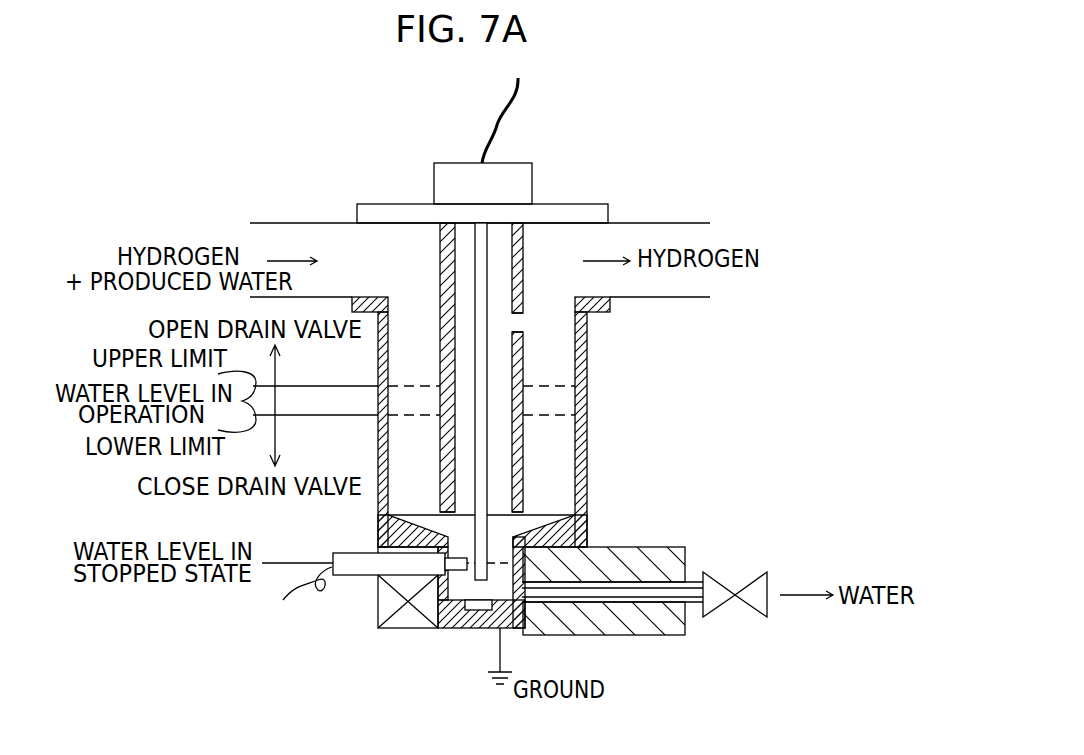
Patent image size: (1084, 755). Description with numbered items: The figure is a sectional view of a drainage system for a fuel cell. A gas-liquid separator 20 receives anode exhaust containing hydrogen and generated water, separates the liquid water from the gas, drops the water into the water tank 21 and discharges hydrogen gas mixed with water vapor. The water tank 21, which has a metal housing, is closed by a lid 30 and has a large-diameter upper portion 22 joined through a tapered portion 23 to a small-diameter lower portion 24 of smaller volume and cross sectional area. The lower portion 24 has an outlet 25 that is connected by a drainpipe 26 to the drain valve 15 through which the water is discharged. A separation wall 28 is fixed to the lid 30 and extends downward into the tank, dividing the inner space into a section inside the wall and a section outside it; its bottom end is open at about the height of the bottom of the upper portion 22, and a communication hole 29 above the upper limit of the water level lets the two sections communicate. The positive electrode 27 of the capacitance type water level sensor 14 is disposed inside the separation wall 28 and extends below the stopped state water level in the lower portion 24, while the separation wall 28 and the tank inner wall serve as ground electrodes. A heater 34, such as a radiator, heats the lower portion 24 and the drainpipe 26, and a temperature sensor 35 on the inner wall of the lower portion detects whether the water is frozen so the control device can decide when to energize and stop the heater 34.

The water level sensor 14 is at (532, 187).
The drain valve 15 is at (767, 612).
The gas-liquid separator 20 is at (390, 245).
The water tank 21 is at (587, 372).
The upper portion 22 is at (572, 448).
The tapered portion 23 is at (545, 515).
The lower portion 24 is at (450, 590).
The outlet 25 is at (522, 595).
The drainpipe 26 is at (658, 607).
The positive electrode 27 is at (478, 628).
The separation wall 28 is at (503, 483).
The communication hole 29 is at (518, 322).
The lid 30 is at (610, 215).
The heater 34 is at (638, 548).
The temperature sensor 35 is at (345, 553).